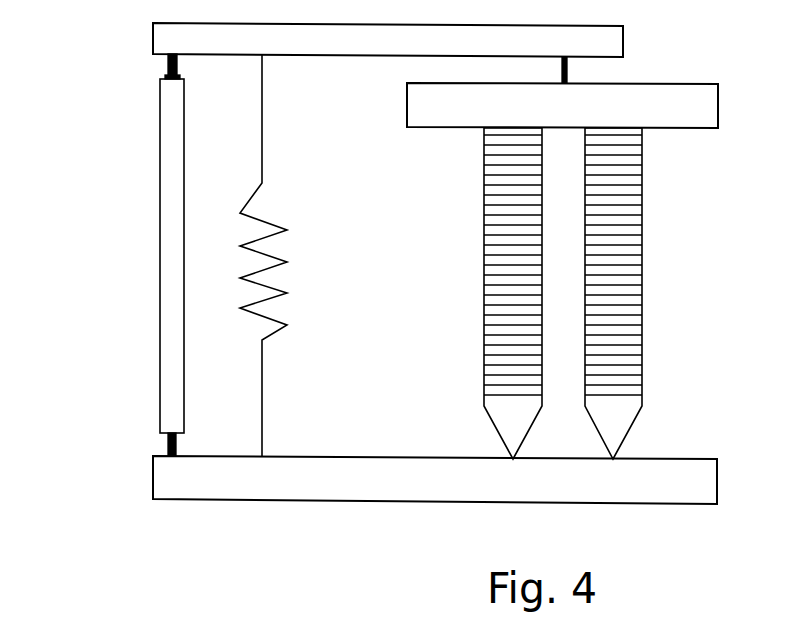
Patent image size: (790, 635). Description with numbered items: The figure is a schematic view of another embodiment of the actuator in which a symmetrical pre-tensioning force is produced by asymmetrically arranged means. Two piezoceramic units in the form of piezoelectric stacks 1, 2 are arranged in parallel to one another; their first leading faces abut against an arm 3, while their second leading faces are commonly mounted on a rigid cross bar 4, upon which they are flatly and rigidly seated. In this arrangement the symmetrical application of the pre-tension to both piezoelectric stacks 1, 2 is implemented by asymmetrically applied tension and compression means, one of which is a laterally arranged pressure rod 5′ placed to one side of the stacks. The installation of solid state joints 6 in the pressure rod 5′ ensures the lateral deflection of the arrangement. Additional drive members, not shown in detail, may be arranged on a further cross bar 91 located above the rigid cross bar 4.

The cross bar 91 is at (215, 37).
The solid state joints 6 is at (168, 70).
The rigid cross bar 4 is at (429, 111).
The piezoelectric stack 1 is at (498, 232).
The pressure rod 5′ is at (172, 277).
The piezoelectric stack 2 is at (605, 290).
The arm 3 is at (415, 483).